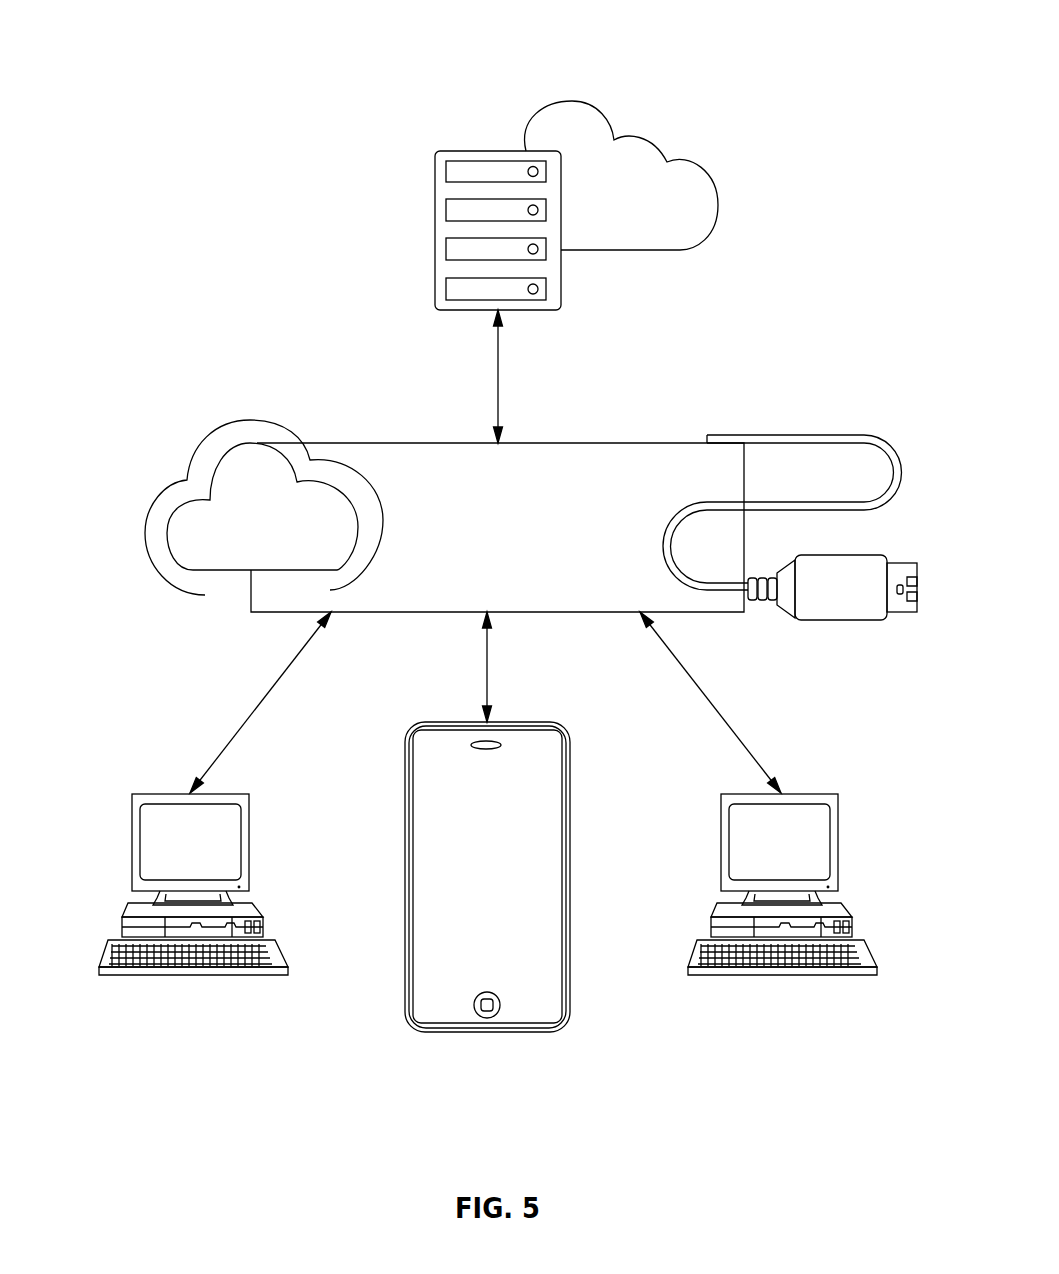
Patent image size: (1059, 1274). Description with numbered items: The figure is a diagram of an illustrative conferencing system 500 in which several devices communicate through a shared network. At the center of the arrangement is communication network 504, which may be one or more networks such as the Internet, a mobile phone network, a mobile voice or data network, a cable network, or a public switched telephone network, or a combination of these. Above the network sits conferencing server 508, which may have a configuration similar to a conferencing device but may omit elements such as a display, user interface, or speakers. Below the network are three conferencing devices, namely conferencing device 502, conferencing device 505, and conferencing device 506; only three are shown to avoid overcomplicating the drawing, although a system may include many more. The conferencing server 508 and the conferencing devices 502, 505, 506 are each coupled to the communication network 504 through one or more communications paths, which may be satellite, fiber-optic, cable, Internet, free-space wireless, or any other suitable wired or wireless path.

The system 500 is at (136, 56).
The conferencing device 502 is at (405, 870).
The communication network 504 is at (403, 443).
The conferencing device 505 is at (132, 843).
The conferencing device 506 is at (721, 843).
The conferencing server 508 is at (500, 150).